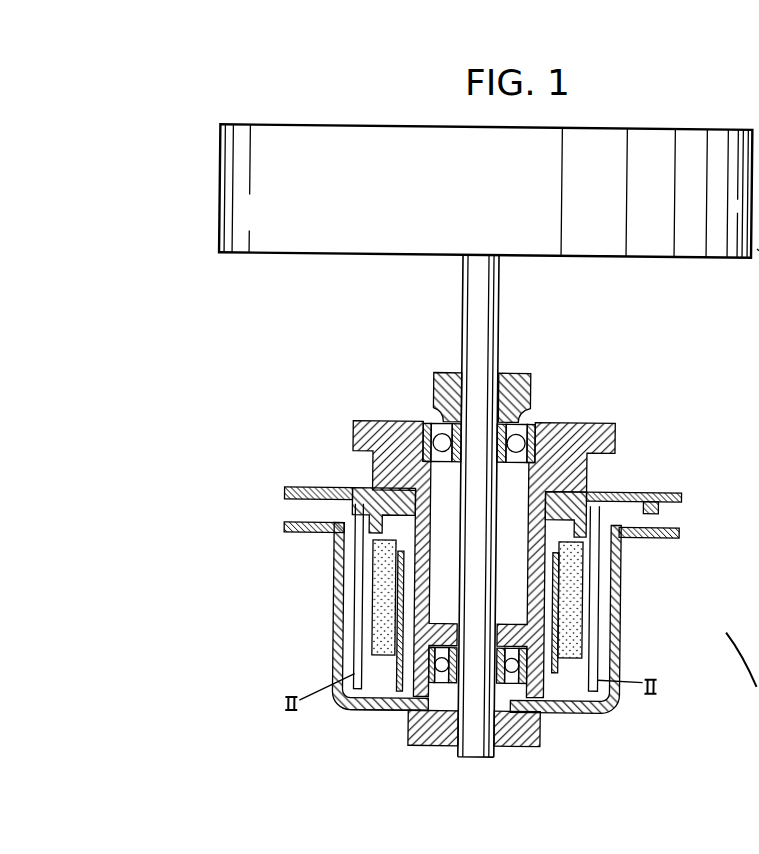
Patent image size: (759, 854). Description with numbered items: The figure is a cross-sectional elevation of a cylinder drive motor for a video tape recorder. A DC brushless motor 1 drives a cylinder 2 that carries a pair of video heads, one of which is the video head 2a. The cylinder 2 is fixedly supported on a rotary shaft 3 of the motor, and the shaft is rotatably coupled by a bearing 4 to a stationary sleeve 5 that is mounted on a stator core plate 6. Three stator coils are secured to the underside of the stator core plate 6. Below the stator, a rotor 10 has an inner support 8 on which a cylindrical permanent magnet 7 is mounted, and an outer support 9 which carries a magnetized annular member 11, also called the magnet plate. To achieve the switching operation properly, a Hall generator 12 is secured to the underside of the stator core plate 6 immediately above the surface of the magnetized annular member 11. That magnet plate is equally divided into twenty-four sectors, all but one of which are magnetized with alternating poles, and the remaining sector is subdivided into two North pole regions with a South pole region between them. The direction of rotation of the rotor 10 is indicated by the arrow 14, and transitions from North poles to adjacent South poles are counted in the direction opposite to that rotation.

The DC brushless motor 1 is at (311, 417).
The cylinder 2 is at (742, 130).
The video head 2a is at (213, 231).
The rotary shaft 3 is at (498, 360).
The bearing 4 is at (530, 423).
The stationary sleeve 5 is at (612, 422).
The stator core plate 6 is at (632, 491).
The cylindrical permanent magnet 7 is at (355, 640).
The inner support 8 is at (398, 680).
The outer support 9 is at (335, 605).
The rotor 10 is at (376, 711).
The magnetized annular member 11 is at (649, 537).
The Hall generator 12 is at (655, 501).
The arrow 14 is at (746, 665).